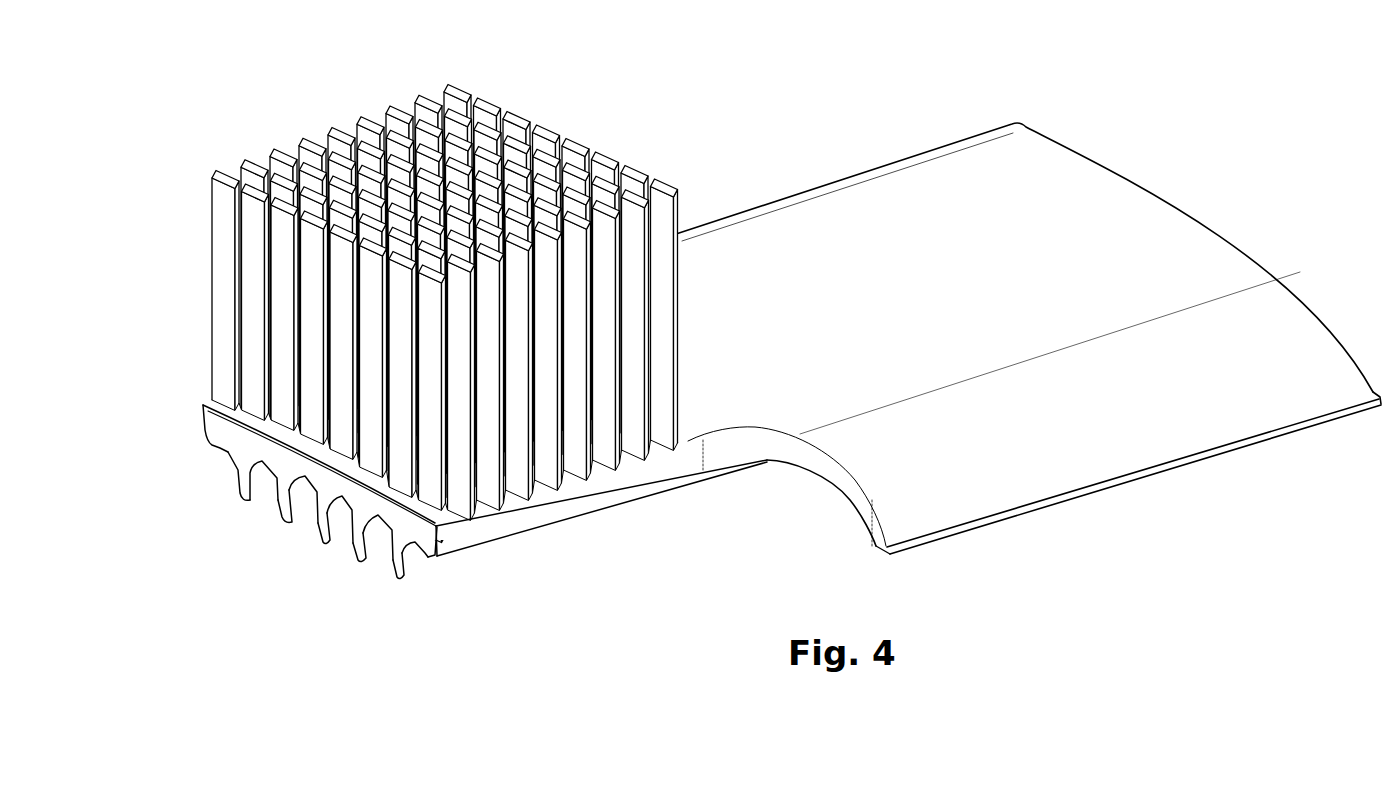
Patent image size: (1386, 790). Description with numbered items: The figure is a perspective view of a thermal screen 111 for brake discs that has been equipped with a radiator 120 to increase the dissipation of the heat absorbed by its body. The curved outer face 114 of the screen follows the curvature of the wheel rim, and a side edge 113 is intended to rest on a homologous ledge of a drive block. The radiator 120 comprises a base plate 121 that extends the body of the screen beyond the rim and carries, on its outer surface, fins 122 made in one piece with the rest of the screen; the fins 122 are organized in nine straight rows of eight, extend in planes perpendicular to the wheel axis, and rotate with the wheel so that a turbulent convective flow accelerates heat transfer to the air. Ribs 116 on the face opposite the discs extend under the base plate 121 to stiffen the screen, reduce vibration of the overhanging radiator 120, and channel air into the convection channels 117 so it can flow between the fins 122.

The thermal screen 111 is at (1028, 343).
The side edge 113 is at (1049, 509).
The outer face 114 is at (1024, 335).
The ribs 116 is at (408, 575).
The convection channels 117 is at (383, 582).
The radiator 120 is at (429, 372).
The base plate 121 is at (542, 508).
The fins 122 is at (440, 70).